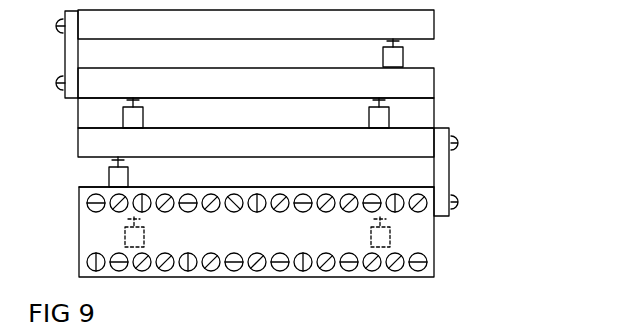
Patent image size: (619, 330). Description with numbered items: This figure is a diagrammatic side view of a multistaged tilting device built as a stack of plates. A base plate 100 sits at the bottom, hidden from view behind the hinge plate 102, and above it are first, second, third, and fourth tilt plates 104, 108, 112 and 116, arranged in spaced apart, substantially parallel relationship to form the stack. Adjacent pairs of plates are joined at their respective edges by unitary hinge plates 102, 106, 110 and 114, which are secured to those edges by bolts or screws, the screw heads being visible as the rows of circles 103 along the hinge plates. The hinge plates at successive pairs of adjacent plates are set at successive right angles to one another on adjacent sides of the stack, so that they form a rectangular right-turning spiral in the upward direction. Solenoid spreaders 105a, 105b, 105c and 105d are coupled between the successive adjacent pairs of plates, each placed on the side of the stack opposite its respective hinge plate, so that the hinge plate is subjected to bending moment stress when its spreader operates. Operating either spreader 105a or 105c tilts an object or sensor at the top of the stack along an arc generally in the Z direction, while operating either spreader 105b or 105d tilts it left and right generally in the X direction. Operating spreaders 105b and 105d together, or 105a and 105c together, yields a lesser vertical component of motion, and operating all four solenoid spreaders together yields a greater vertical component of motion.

The base plate 100 is at (261, 238).
The hinge plate 102 is at (265, 241).
The screw terminals 103 is at (87, 203).
The first tilt plate 104 is at (403, 187).
The solenoid spreader 105a is at (125, 237).
The solenoid spreader 105b is at (109, 171).
The solenoid spreader 105c is at (123, 114).
The solenoid spreader 105d is at (403, 62).
The hinge plate 106 is at (449, 158).
The second tilt plate 108 is at (265, 152).
The hinge plate 110 is at (263, 124).
The third tilt plate 112 is at (258, 91).
The hinge plate 114 is at (65, 46).
The fourth tilt plate 116 is at (257, 34).